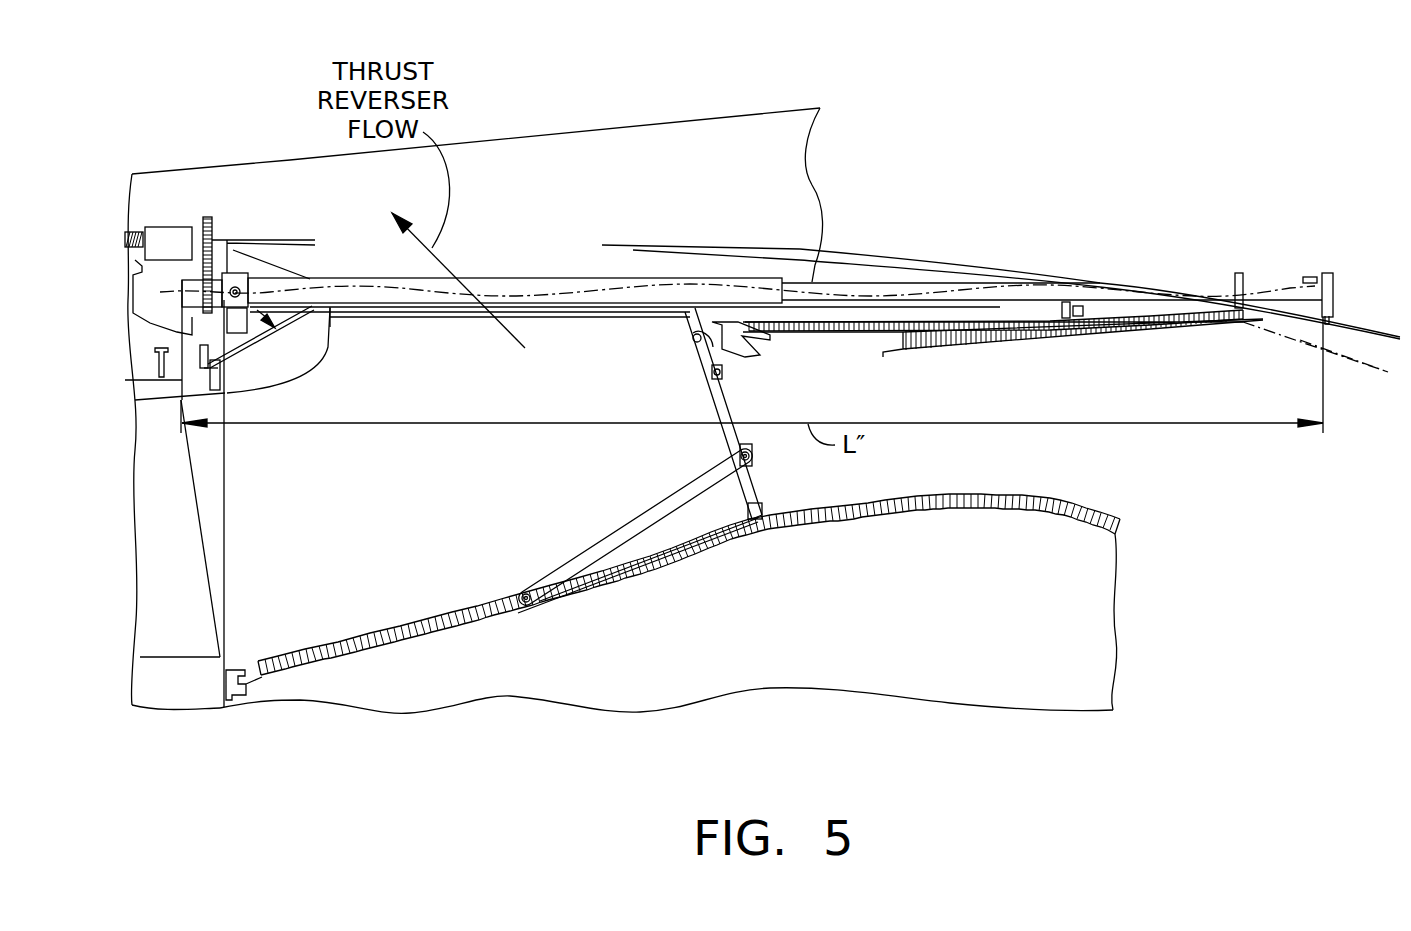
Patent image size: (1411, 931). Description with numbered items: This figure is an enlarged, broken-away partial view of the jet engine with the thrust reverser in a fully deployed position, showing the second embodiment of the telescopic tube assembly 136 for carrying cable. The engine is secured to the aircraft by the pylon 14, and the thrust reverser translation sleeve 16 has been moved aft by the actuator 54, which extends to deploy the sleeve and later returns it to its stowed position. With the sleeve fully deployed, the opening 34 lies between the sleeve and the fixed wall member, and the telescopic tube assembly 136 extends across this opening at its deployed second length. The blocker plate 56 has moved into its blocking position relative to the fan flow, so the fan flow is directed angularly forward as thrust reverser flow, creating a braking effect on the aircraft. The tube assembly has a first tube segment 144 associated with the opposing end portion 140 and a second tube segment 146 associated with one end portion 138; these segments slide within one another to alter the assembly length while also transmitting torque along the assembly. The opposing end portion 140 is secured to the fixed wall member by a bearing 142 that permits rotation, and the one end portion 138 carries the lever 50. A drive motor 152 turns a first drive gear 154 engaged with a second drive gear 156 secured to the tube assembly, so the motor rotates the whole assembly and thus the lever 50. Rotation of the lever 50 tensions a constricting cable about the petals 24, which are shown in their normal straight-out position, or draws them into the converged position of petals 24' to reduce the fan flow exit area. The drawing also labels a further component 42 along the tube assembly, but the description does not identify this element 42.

The pylon 14 is at (770, 152).
The thrust reverser translation sleeve 16 is at (826, 250).
The petals 24 is at (1251, 311).
The converged petals 24' is at (1315, 357).
The opening 34 is at (485, 347).
The track beam 42 is at (386, 287).
The lever 50 is at (1333, 283).
The actuator 54 is at (400, 317).
The blocker plate 56 is at (710, 410).
The telescopic tube assembly 136 is at (477, 278).
The one end portion 138 is at (1273, 268).
The opposing end portion 140 is at (310, 357).
The bearing 142 is at (253, 273).
The first tube segment 144 is at (573, 278).
The second tube segment 146 is at (1138, 285).
The drive motor 152 is at (168, 232).
The first drive gear 154 is at (207, 217).
The second drive gear 156 is at (229, 348).